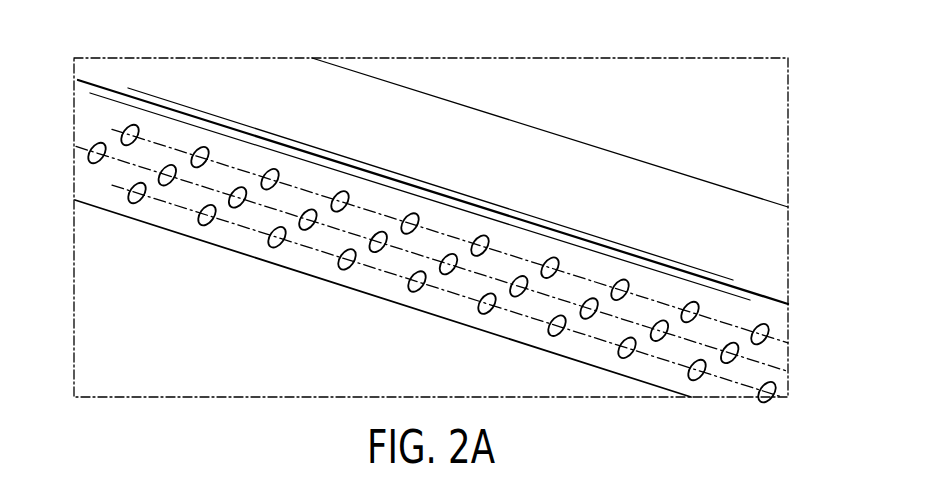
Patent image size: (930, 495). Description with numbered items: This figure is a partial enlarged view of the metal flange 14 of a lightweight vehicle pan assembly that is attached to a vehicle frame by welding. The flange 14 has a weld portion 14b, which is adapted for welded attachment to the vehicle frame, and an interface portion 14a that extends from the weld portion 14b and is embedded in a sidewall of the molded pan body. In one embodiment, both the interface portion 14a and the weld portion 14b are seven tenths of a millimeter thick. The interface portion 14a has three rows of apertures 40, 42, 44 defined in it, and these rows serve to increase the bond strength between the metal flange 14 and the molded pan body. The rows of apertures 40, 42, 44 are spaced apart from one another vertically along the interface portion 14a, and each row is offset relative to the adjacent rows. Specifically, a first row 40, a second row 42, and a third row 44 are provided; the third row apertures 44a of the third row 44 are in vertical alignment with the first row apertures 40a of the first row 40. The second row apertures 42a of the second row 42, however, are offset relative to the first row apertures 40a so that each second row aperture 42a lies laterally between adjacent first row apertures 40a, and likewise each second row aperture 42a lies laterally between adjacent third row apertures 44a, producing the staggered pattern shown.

The flange 14 is at (621, 122).
The interface portion 14a is at (235, 243).
The weld portion 14b is at (515, 130).
The first row of apertures 40 is at (102, 126).
The first row apertures 40a is at (558, 270).
The second row of apertures 42 is at (71, 146).
The second row apertures 42a is at (523, 289).
The third row of apertures 44 is at (106, 184).
The third row apertures 44a is at (481, 306).